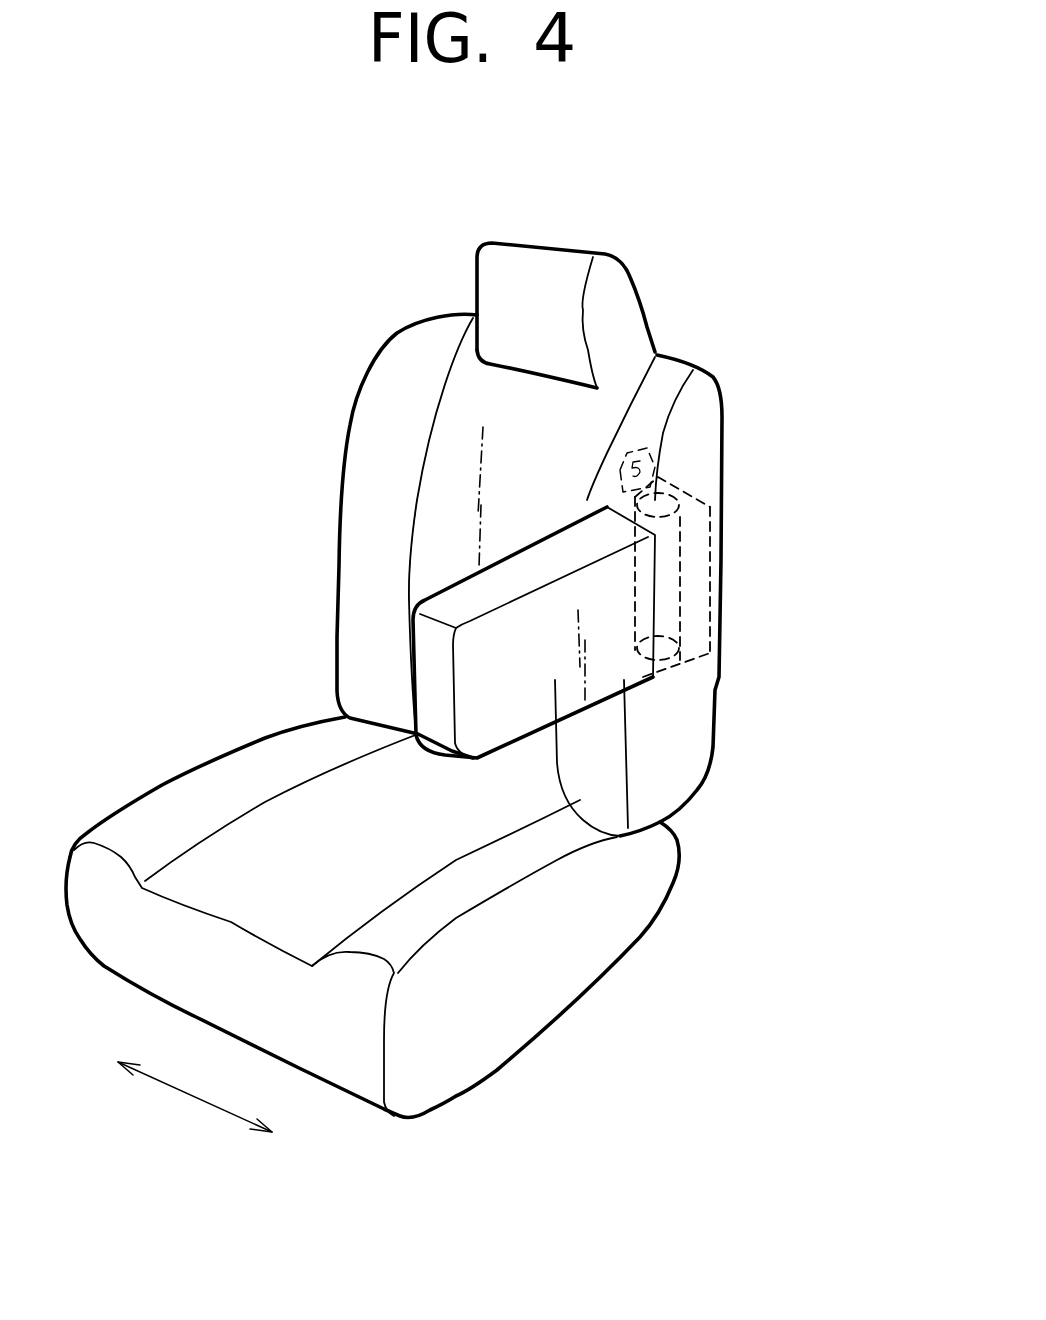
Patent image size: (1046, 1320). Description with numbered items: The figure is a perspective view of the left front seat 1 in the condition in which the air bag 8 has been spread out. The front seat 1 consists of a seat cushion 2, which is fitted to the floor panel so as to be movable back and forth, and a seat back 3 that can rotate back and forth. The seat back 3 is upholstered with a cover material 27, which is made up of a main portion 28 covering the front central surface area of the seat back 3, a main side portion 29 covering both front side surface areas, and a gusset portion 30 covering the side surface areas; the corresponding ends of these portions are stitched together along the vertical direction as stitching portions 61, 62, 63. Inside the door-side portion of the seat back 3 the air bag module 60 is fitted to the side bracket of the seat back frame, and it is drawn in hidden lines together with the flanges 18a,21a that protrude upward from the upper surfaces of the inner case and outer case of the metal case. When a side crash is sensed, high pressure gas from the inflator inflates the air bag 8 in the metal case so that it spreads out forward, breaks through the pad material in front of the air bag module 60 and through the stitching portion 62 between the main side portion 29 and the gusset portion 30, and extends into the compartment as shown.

The front seat 1 is at (200, 532).
The seat cushion 2 is at (276, 726).
The seat back 3 is at (334, 555).
The air bag 8 is at (480, 720).
The cover material 27 is at (396, 385).
The main portion 28 is at (533, 410).
The main side portion 29 is at (427, 347).
The gusset portion 30 is at (680, 725).
The air bag module 60 is at (690, 613).
The stitching portion 61 is at (421, 448).
The stitching portion 62 is at (343, 487).
The stitching portion 63 is at (722, 577).
The flanges 18a,21a is at (653, 440).